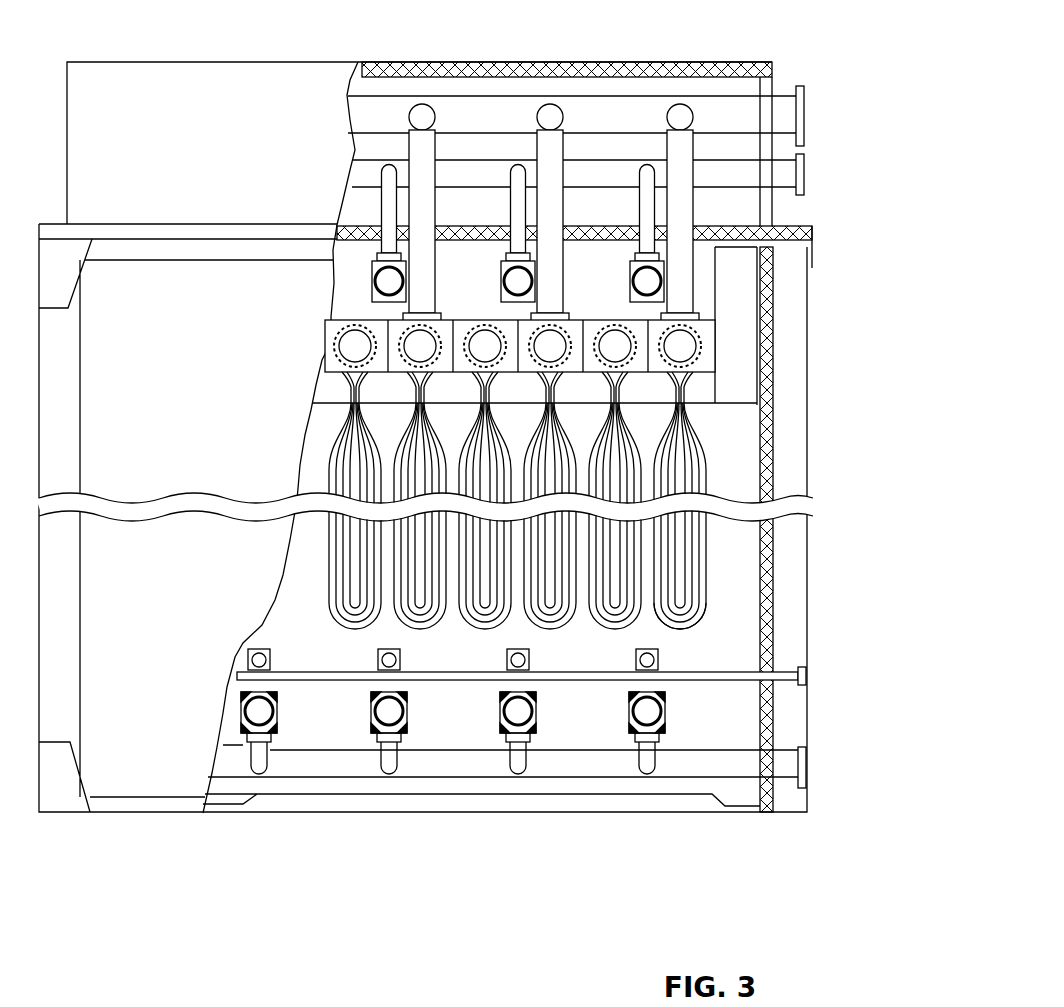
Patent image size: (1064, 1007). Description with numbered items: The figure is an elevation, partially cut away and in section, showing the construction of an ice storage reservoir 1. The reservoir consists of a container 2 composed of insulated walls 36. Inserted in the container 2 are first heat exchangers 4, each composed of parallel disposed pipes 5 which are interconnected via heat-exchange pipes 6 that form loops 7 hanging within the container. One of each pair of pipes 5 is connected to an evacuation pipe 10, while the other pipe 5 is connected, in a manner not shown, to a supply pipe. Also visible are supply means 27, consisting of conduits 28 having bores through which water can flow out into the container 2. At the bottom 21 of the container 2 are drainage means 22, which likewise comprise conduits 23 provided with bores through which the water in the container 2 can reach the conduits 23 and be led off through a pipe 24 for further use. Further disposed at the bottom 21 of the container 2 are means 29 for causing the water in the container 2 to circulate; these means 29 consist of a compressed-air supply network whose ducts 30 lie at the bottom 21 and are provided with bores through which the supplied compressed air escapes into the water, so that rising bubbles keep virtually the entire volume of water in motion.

The ice storage reservoir 1 is at (122, 826).
The container 2 is at (155, 727).
The first heat exchangers 4 is at (582, 520).
The pipes 5 is at (608, 321).
The heat-exchange pipes 6 is at (705, 520).
The loops 7 is at (697, 627).
The evacuation pipe 10 is at (735, 110).
The bottom 21 is at (745, 718).
The drainage means 22 is at (612, 780).
The conduits 23 is at (516, 714).
The pipe 24 is at (788, 772).
The supply means 27 is at (812, 170).
The conduits 28 is at (508, 278).
The means for circulating the water 29 is at (742, 670).
The ducts 30 is at (637, 660).
The insulated walls 36 is at (770, 575).